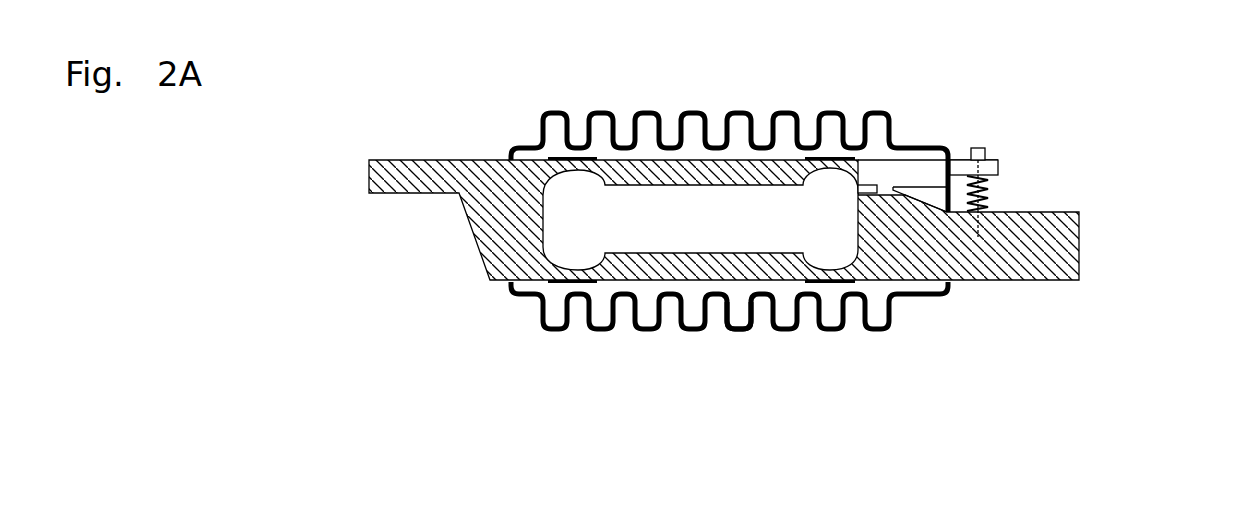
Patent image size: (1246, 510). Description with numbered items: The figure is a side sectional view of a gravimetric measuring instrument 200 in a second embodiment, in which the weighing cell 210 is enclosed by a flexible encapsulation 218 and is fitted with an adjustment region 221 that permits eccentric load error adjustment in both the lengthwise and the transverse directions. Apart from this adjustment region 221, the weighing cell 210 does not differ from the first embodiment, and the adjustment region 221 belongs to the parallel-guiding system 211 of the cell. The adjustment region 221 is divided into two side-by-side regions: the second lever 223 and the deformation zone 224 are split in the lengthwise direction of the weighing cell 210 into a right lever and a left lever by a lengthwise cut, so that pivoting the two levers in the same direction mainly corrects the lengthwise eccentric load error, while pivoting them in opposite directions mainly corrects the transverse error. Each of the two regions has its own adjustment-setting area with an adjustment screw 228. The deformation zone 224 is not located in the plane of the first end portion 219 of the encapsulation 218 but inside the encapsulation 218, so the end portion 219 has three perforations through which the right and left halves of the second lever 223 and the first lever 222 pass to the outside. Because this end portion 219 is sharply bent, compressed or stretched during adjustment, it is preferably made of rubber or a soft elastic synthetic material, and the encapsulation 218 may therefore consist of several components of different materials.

The gravimetric measuring instrument 200 is at (378, 115).
The weighing cell 210 is at (666, 365).
The parallel-guiding system 211 is at (740, 303).
The encapsulation 218 is at (690, 108).
The first end portion 219 is at (952, 283).
The adjustment region 221 is at (1022, 188).
The first lever 222 is at (1042, 252).
The second lever 223 is at (987, 170).
The deformation zone 224 is at (883, 187).
The adjustment screw 228 is at (979, 148).